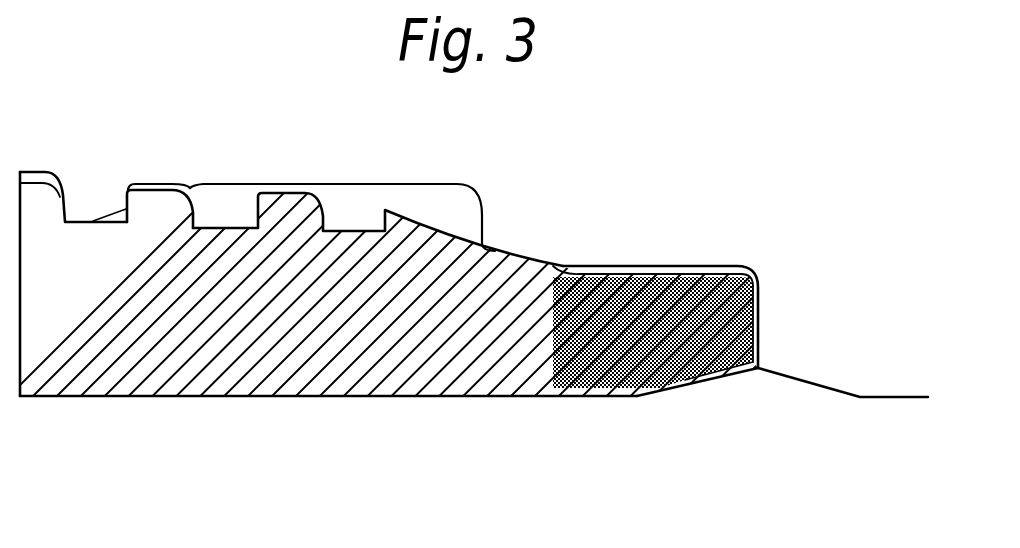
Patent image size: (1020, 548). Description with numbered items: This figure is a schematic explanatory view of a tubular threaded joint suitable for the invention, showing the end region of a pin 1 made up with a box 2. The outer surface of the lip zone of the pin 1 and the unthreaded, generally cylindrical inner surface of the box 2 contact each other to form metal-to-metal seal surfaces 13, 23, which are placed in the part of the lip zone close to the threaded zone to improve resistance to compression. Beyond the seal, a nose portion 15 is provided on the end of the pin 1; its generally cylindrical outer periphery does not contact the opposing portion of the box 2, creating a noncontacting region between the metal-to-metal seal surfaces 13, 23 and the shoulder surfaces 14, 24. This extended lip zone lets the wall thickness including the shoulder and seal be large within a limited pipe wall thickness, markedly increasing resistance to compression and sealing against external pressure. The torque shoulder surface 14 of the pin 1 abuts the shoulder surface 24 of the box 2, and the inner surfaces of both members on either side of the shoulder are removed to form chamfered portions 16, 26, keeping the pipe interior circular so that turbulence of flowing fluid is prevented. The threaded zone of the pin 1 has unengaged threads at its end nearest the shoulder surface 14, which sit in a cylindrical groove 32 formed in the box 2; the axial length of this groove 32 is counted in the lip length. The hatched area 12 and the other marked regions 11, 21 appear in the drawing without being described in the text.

The pin 1 is at (187, 383).
The box 2 is at (660, 276).
The tooth 11 is at (150, 208).
The bottom surface 12 is at (547, 373).
The metal-to-metal seal surface 13 is at (515, 257).
The torque shoulder surface 14 is at (756, 333).
The nose portion 15 is at (608, 332).
The chamfered portion 16 is at (680, 387).
The groove 21 is at (92, 200).
The metal-to-metal seal surface 23 is at (530, 253).
The shoulder surface 24 is at (758, 333).
The chamfered portion 26 is at (815, 388).
The cylindrical groove 32 is at (350, 207).